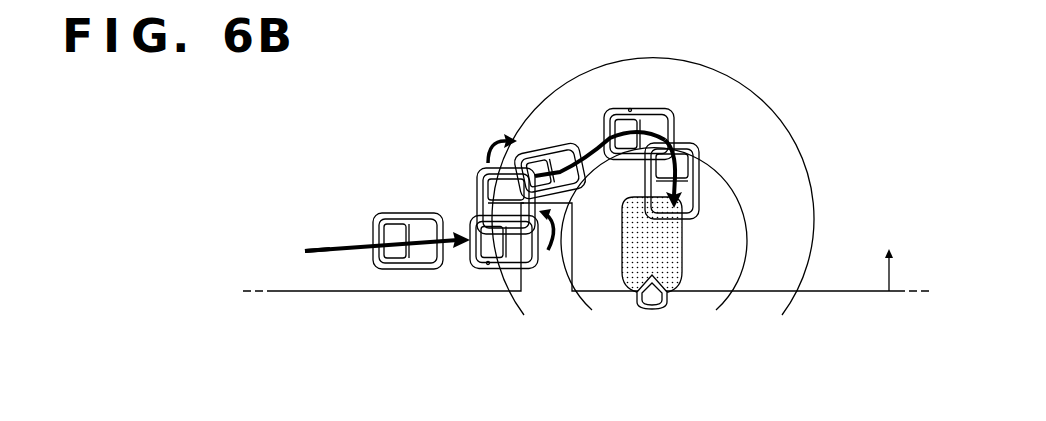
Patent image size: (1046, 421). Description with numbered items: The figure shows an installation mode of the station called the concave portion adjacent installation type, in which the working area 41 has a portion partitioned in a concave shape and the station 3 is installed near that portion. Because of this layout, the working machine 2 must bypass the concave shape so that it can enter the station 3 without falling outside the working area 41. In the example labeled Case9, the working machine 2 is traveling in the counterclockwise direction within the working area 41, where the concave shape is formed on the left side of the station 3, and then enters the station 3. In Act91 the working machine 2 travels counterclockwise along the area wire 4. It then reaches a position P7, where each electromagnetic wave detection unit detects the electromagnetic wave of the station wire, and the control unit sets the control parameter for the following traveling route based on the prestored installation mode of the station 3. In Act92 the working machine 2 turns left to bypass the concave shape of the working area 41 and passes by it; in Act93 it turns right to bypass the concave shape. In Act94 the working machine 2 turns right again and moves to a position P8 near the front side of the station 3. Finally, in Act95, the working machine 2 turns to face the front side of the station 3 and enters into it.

The working machine 2 is at (393, 214).
The station 3 is at (648, 309).
The area wire 4 is at (831, 293).
The working area 41 is at (937, 271).
The position P7 is at (488, 264).
The position P8 is at (630, 108).
The element Act91 is at (348, 243).
The element Act92 is at (555, 255).
The element Act93 is at (489, 146).
The element Act94 is at (589, 143).
The element Act95 is at (673, 120).
The element Case9 is at (280, 250).